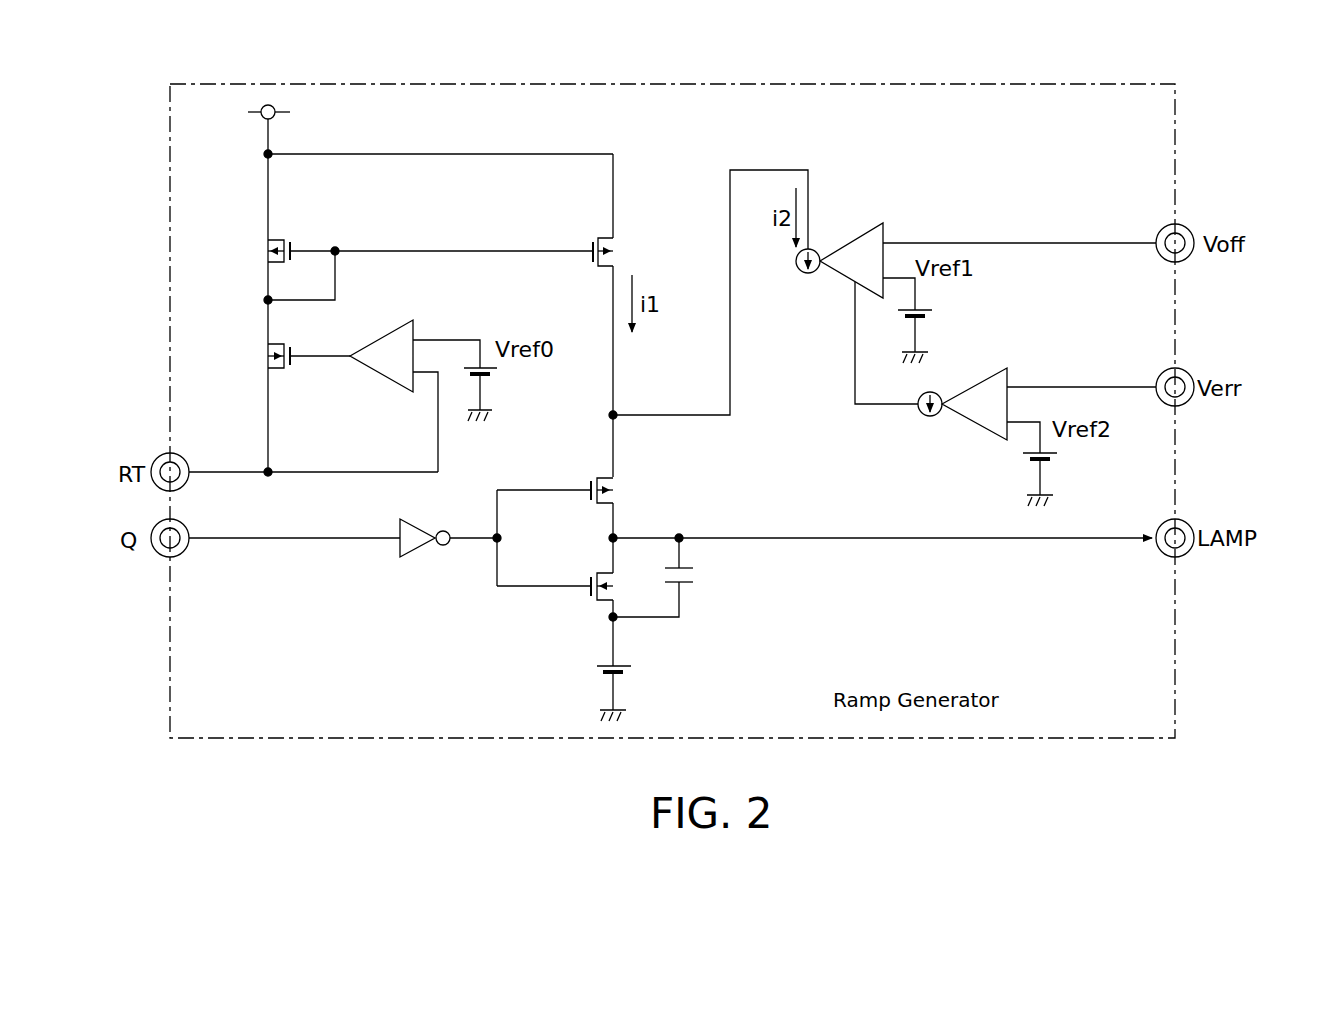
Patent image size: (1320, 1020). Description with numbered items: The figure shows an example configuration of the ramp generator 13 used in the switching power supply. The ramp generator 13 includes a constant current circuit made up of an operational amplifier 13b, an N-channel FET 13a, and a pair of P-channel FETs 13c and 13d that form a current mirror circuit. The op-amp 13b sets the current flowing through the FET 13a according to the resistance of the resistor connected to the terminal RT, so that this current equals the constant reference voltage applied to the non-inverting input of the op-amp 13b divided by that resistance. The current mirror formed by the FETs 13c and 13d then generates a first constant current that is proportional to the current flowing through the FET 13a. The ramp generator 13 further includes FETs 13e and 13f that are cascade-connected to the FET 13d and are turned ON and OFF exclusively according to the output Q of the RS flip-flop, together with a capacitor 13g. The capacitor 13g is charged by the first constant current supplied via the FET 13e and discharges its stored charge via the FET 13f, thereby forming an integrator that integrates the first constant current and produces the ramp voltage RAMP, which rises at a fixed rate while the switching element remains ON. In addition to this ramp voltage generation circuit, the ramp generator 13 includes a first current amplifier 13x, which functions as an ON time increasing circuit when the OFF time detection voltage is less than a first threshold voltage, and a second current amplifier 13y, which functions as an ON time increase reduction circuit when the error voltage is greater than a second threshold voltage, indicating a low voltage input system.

The ramp generator 13 is at (1152, 117).
The N-channel FET 13a is at (283, 374).
The operational amplifier 13b is at (395, 330).
The P-channel FET 13c is at (287, 233).
The P-channel FET 13d is at (619, 237).
The FET 13e is at (599, 472).
The FET 13f is at (596, 607).
The capacitor 13g is at (686, 590).
The first current amplifier 13x is at (855, 233).
The second current amplifier 13y is at (980, 376).